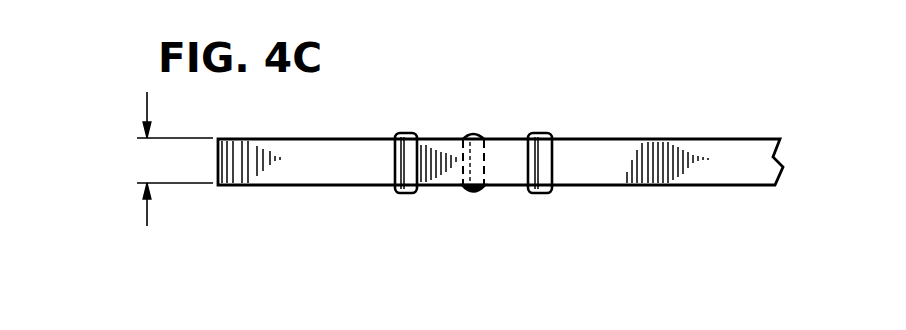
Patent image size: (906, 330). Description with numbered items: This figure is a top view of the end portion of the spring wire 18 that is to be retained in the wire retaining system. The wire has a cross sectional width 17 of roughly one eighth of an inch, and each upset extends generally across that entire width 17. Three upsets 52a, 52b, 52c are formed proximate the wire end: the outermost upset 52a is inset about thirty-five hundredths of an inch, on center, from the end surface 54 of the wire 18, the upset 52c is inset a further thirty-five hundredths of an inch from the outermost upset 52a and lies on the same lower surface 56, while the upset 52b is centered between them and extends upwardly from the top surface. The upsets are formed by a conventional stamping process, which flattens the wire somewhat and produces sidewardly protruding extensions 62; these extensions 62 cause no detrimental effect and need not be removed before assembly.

The cross sectional width 17 is at (145, 163).
The spring wire 18 is at (735, 140).
The end surface 54 is at (215, 163).
The lower surface 56 is at (613, 157).
The outermost upset 52a is at (405, 193).
The upset 52b is at (477, 195).
The upset 52c is at (545, 195).
The sidewardly protruding extensions 62 is at (403, 133).